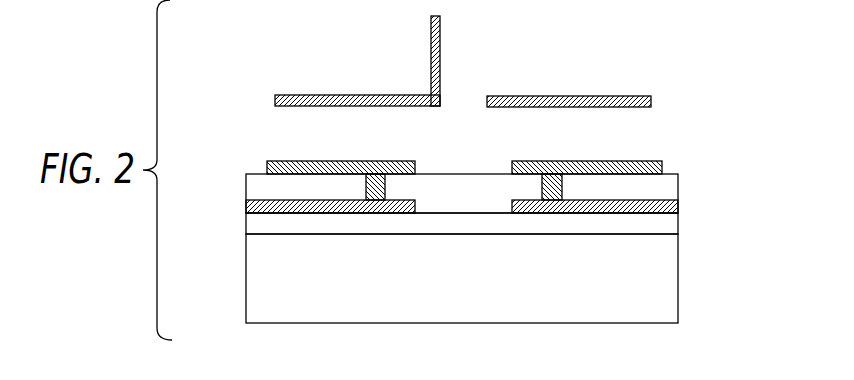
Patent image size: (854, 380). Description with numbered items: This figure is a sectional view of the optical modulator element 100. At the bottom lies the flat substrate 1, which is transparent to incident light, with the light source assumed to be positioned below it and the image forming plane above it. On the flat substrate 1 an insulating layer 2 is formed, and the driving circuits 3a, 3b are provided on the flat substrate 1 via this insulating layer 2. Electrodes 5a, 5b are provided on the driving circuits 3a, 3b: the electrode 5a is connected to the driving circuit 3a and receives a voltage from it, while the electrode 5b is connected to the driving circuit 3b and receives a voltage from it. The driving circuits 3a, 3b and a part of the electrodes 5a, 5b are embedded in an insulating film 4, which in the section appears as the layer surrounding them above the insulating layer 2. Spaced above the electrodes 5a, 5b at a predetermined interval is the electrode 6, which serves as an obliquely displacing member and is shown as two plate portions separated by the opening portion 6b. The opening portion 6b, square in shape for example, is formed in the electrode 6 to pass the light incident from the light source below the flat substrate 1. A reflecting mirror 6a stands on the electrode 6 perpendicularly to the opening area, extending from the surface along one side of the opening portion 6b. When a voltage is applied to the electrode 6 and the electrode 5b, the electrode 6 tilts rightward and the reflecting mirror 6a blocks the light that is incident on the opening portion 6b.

The flat substrate 1 is at (678, 280).
The insulating layer 2 is at (678, 231).
The driving circuit 3a is at (246, 207).
The driving circuit 3b is at (678, 209).
The insulating film 4 is at (678, 184).
The electrode 5a is at (266, 166).
The electrode 5b is at (662, 166).
The electrode 6 is at (292, 94).
The reflecting mirror 6a is at (440, 27).
The opening portion 6b is at (467, 98).
The optical modulator element 100 is at (481, 59).